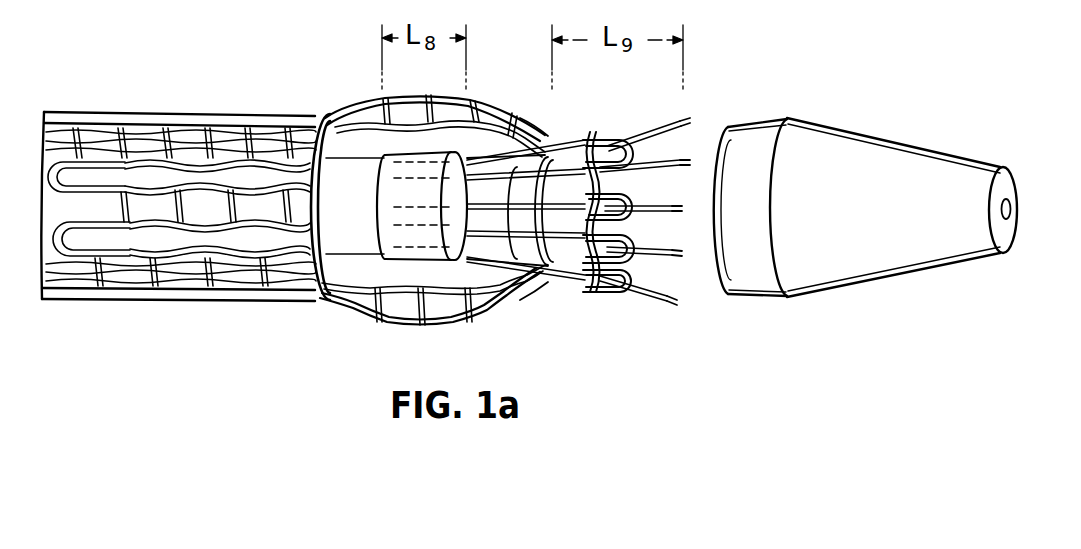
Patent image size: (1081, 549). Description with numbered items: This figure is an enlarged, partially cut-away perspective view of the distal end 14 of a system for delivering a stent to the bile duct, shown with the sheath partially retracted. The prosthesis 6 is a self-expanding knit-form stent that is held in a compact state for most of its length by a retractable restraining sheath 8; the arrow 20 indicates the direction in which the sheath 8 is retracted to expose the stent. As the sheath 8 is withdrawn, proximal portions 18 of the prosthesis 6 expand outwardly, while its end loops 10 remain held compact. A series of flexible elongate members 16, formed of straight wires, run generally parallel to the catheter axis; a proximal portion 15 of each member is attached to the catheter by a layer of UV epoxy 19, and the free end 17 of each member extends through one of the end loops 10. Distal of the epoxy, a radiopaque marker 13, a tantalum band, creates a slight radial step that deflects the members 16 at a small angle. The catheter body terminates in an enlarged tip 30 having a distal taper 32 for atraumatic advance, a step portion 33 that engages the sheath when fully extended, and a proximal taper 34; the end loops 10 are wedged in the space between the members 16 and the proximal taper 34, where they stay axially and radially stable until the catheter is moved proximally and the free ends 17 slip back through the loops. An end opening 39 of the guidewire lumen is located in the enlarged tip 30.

The prosthesis 6 is at (523, 116).
The retractable restraining sheath 8 is at (240, 300).
The end loops 10 is at (672, 148).
The radiopaque marker 13 is at (541, 278).
The distal end 14 is at (923, 171).
The proximal portion 15 is at (388, 166).
The flexible elongate members 16 is at (658, 124).
The free end 17 is at (678, 125).
The proximal portions 18 is at (457, 92).
The layer of UV epoxy 19 is at (398, 155).
The arrow 20 is at (122, 92).
The enlarged tip 30 is at (863, 218).
The distal taper 32 is at (897, 137).
The step portion 33 is at (752, 128).
The proximal taper 34 is at (722, 295).
The end opening 39 is at (1012, 205).